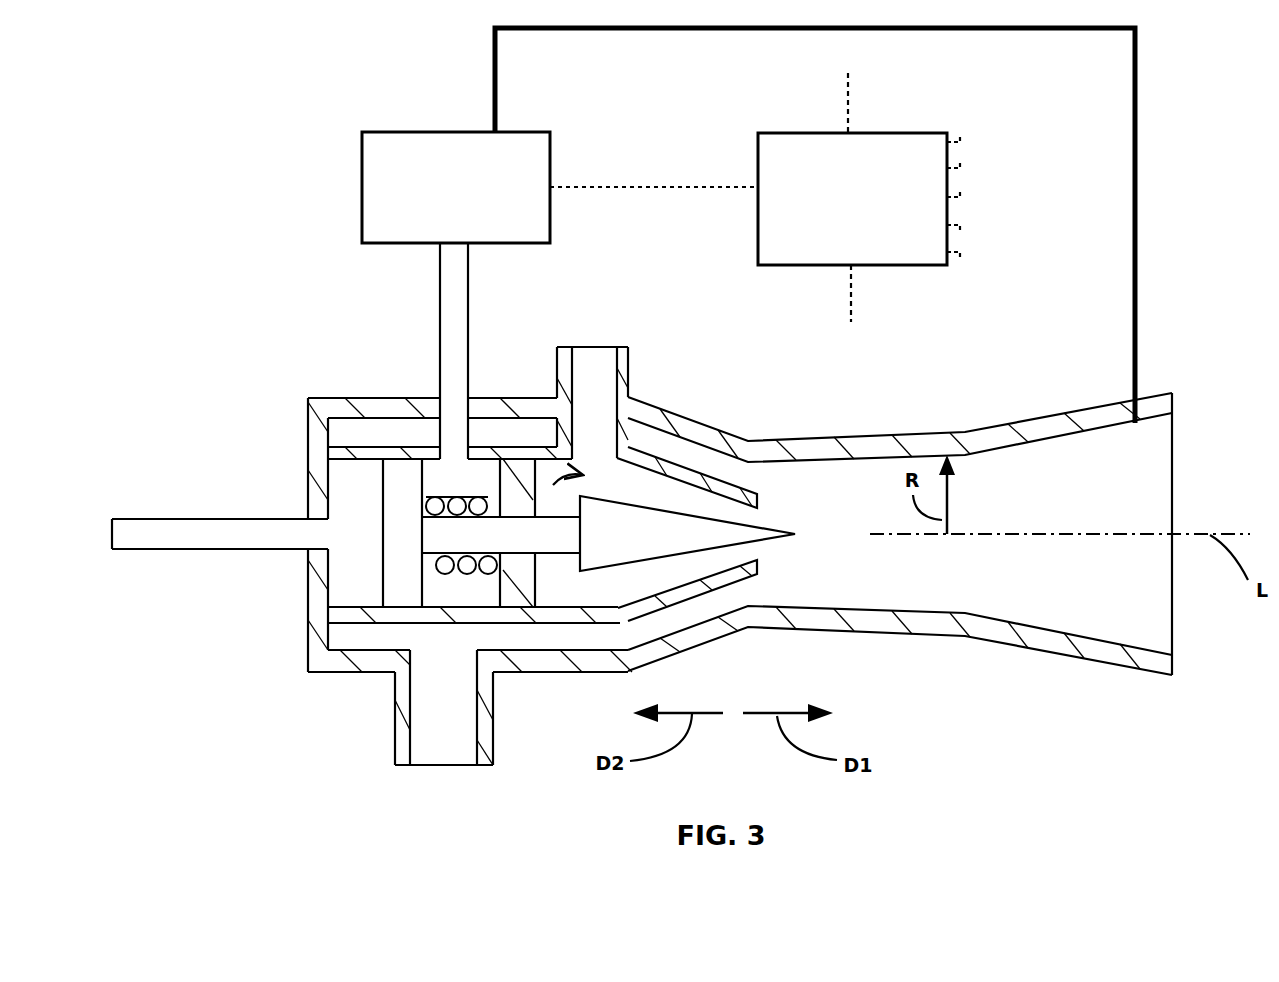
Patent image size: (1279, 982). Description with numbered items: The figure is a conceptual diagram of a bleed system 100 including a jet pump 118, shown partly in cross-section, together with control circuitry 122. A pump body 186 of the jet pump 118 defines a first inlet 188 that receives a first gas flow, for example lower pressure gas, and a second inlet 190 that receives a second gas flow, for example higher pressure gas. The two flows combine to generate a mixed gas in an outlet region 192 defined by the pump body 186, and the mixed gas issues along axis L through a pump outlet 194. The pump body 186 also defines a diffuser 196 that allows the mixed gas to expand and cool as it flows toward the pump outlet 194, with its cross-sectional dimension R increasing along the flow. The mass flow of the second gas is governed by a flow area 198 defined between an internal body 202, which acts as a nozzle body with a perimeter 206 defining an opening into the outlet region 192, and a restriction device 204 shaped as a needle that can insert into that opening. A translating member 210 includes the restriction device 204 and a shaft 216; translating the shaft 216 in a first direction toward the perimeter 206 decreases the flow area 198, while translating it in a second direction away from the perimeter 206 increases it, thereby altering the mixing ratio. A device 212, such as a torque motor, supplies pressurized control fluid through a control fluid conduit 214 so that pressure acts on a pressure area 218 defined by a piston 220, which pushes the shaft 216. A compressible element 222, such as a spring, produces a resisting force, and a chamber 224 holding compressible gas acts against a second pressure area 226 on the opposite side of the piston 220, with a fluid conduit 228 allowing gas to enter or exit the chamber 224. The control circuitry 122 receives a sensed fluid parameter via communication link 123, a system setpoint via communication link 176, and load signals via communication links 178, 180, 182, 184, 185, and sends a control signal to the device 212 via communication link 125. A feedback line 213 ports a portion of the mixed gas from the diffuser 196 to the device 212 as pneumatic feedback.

The bleed system 100 is at (215, 183).
The jet pump 118 is at (198, 402).
The control circuitry 122 is at (852, 199).
The communication link 123 is at (852, 298).
The communication link 125 is at (590, 187).
The communication link 176 is at (850, 92).
The communication link 178 is at (962, 255).
The communication link 180 is at (962, 228).
The communication link 182 is at (962, 195).
The communication link 184 is at (962, 166).
The communication link 185 is at (962, 140).
The pump body 186 is at (347, 398).
The first inlet 188 is at (493, 728).
The second inlet 190 is at (653, 356).
The outlet region 192 is at (1040, 513).
The pump outlet 194 is at (1172, 465).
The diffuser 196 is at (1030, 433).
The flow area 198 is at (760, 518).
The internal body 202 is at (715, 578).
The restriction device 204 is at (687, 533).
The perimeter 206 is at (765, 560).
The translating member 210 is at (545, 562).
The device 212 is at (456, 187).
The feedback line 213 is at (1137, 285).
The control fluid conduit 214 is at (437, 356).
The shaft 216 is at (501, 535).
The pressure area 218 is at (423, 488).
The piston 220 is at (403, 590).
The compressible and/or extendable element 222 is at (431, 570).
The chamber 224 is at (347, 499).
The second pressure area 226 is at (382, 487).
The fluid conduit 228 is at (252, 549).